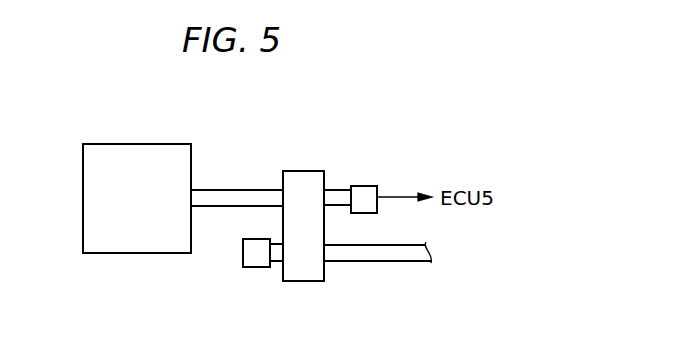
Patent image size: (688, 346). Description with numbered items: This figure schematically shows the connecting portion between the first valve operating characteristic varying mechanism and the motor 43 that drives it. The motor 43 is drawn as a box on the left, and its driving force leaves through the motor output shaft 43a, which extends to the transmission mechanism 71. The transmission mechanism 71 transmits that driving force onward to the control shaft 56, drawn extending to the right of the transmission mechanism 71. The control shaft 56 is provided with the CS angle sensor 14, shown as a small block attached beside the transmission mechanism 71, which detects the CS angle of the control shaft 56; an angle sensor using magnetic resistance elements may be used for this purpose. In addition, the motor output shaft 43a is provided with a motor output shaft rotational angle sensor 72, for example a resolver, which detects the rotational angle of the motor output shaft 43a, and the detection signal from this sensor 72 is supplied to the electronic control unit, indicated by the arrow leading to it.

The motor 43 is at (139, 144).
The motor output shaft 43a is at (238, 190).
The transmission mechanism 71 is at (298, 171).
The motor output shaft rotational angle sensor 72 is at (361, 186).
The CS angle sensor 14 is at (255, 267).
The control shaft 56 is at (377, 261).